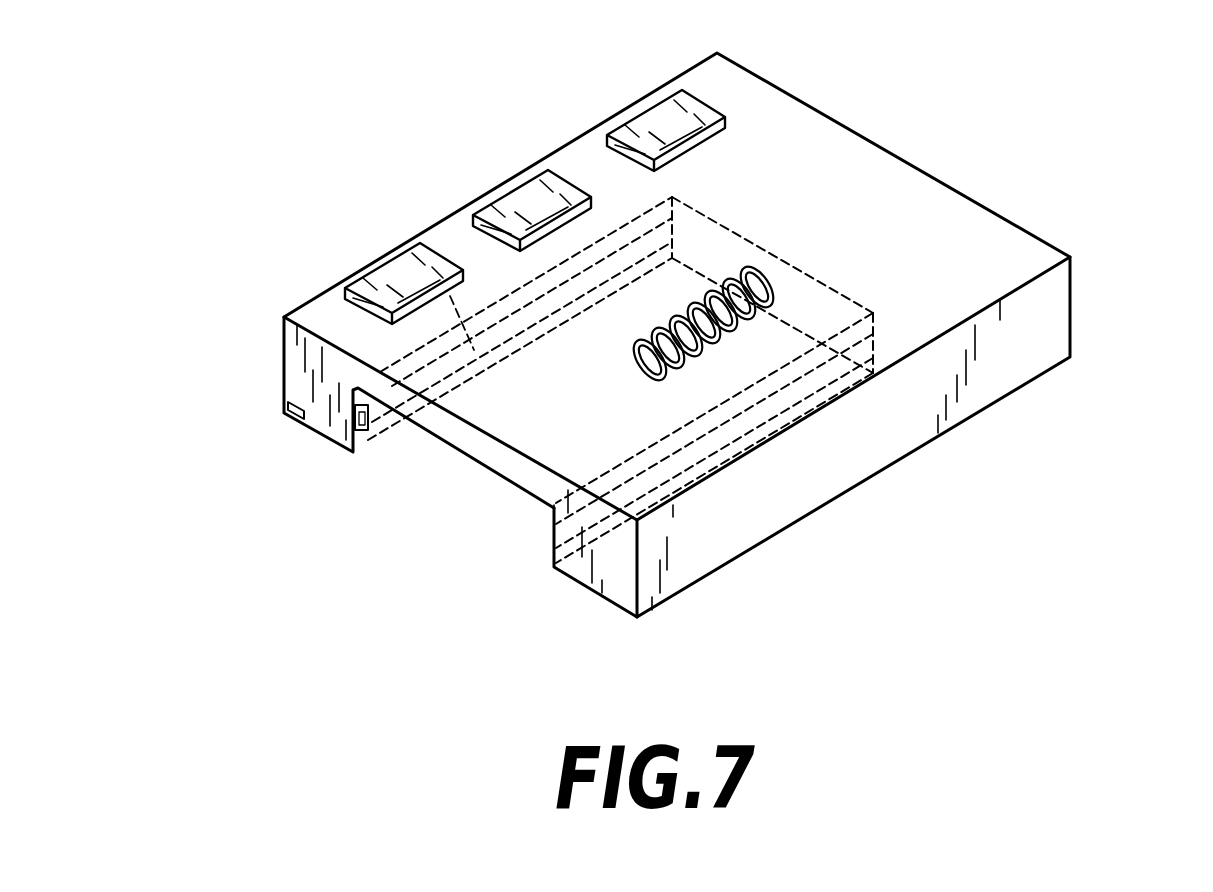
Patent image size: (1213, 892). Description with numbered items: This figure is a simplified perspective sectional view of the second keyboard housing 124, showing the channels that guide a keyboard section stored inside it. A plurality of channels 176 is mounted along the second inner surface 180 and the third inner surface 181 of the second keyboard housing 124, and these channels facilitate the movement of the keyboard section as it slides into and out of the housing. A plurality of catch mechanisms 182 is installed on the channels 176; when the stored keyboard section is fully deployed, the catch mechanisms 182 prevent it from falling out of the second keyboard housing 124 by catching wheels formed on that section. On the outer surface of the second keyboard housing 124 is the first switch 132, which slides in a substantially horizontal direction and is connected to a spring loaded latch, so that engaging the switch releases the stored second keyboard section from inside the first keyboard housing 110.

The first keyboard housing 110 is at (1027, 263).
The second keyboard housing 124 is at (632, 603).
The first switch 132 is at (287, 408).
The channels 176 is at (388, 250).
The second inner surface 180 is at (608, 247).
The third inner surface 181 is at (817, 357).
The catch mechanisms 182 is at (357, 437).